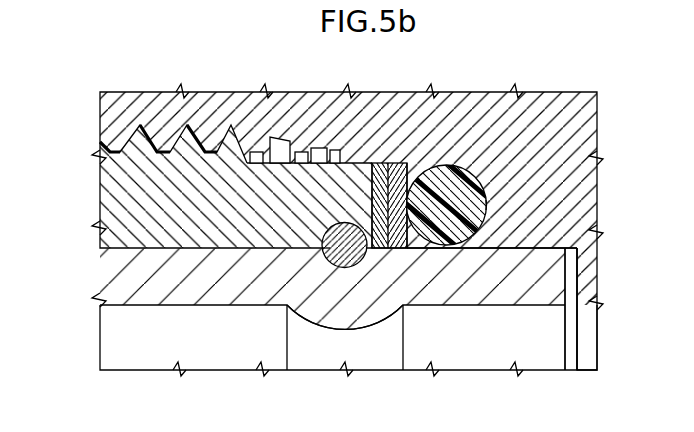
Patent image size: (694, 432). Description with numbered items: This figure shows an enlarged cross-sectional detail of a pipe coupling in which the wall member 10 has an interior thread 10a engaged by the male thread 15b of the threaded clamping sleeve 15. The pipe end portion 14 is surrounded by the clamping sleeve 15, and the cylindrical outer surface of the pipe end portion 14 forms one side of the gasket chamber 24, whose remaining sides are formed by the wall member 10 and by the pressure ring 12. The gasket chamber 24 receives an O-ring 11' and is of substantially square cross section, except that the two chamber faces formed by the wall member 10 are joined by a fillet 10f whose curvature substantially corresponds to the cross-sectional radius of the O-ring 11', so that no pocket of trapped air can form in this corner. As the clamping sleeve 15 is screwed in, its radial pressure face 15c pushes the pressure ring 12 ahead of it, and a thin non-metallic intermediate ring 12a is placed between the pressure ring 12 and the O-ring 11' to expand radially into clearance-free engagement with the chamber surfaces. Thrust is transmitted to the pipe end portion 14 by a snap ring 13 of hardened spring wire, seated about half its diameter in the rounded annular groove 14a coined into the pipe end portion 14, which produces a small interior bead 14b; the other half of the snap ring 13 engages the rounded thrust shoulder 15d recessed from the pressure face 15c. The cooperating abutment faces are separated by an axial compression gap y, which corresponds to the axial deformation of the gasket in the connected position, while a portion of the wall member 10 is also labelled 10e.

The wall member 10 is at (100, 108).
The interior thread 10a is at (163, 142).
The housing wall 10e is at (577, 355).
The fillet 10f is at (488, 213).
The O-ring 11' is at (448, 159).
The pressure ring 12 is at (382, 280).
The intermediate ring 12a is at (400, 247).
The snap ring 13 is at (333, 236).
The pipe end portion 14 is at (100, 276).
The annular groove 14a is at (370, 257).
The interior bead 14b is at (315, 306).
The threaded clamping sleeve 15 is at (100, 202).
The male thread 15b is at (125, 148).
The radial pressure face 15c is at (381, 255).
The rounded thrust shoulder 15d is at (337, 262).
The gasket chamber 24 is at (483, 240).
The axial compression gap y is at (530, 342).